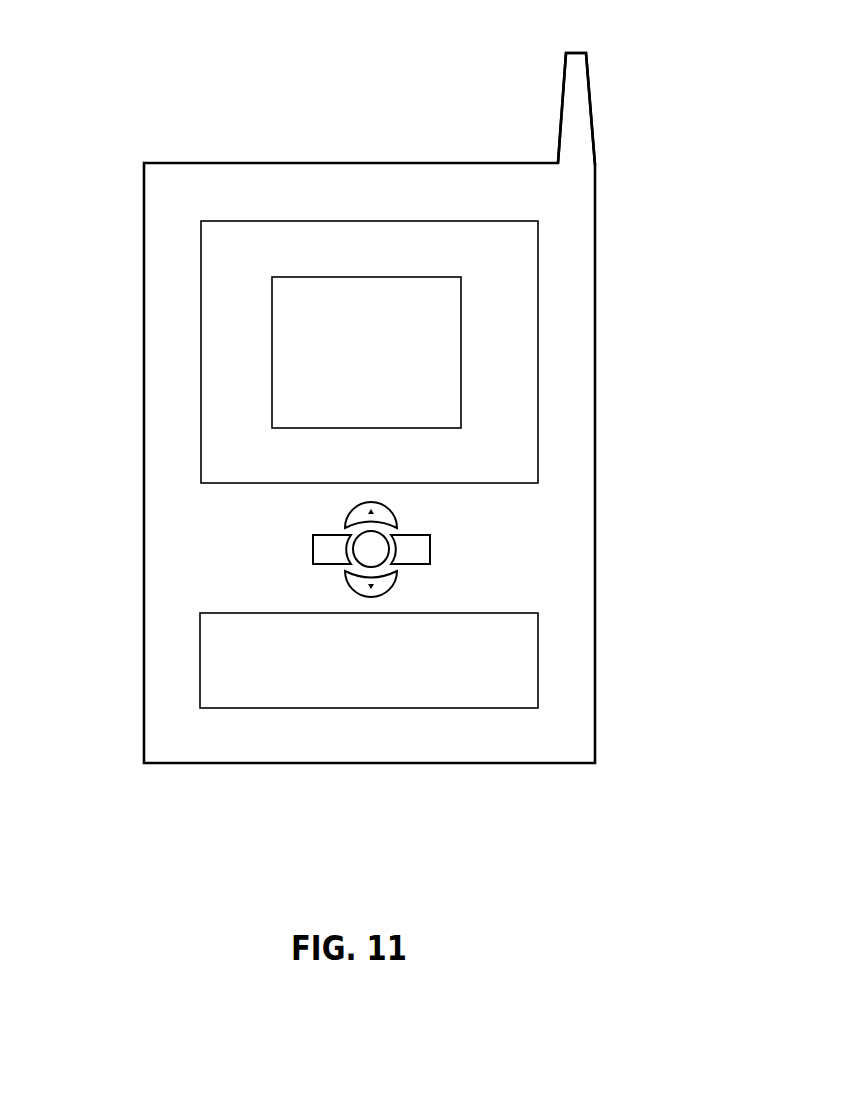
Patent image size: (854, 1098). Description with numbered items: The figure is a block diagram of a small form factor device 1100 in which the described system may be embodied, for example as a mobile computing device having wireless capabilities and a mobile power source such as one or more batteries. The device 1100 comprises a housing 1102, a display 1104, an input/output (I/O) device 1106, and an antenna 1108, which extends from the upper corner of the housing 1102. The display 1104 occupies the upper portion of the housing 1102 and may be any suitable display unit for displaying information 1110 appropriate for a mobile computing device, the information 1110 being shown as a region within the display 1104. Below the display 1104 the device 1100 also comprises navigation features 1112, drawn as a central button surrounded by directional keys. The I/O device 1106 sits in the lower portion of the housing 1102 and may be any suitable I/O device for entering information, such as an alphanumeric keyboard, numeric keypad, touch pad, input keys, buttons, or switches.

The small form factor device 1100 is at (409, 386).
The housing 1102 is at (596, 463).
The display 1104 is at (538, 239).
The input/output (I/O) device 1106 is at (539, 651).
The antenna 1108 is at (562, 100).
The information 1110 is at (462, 352).
The navigation features 1112 is at (442, 540).